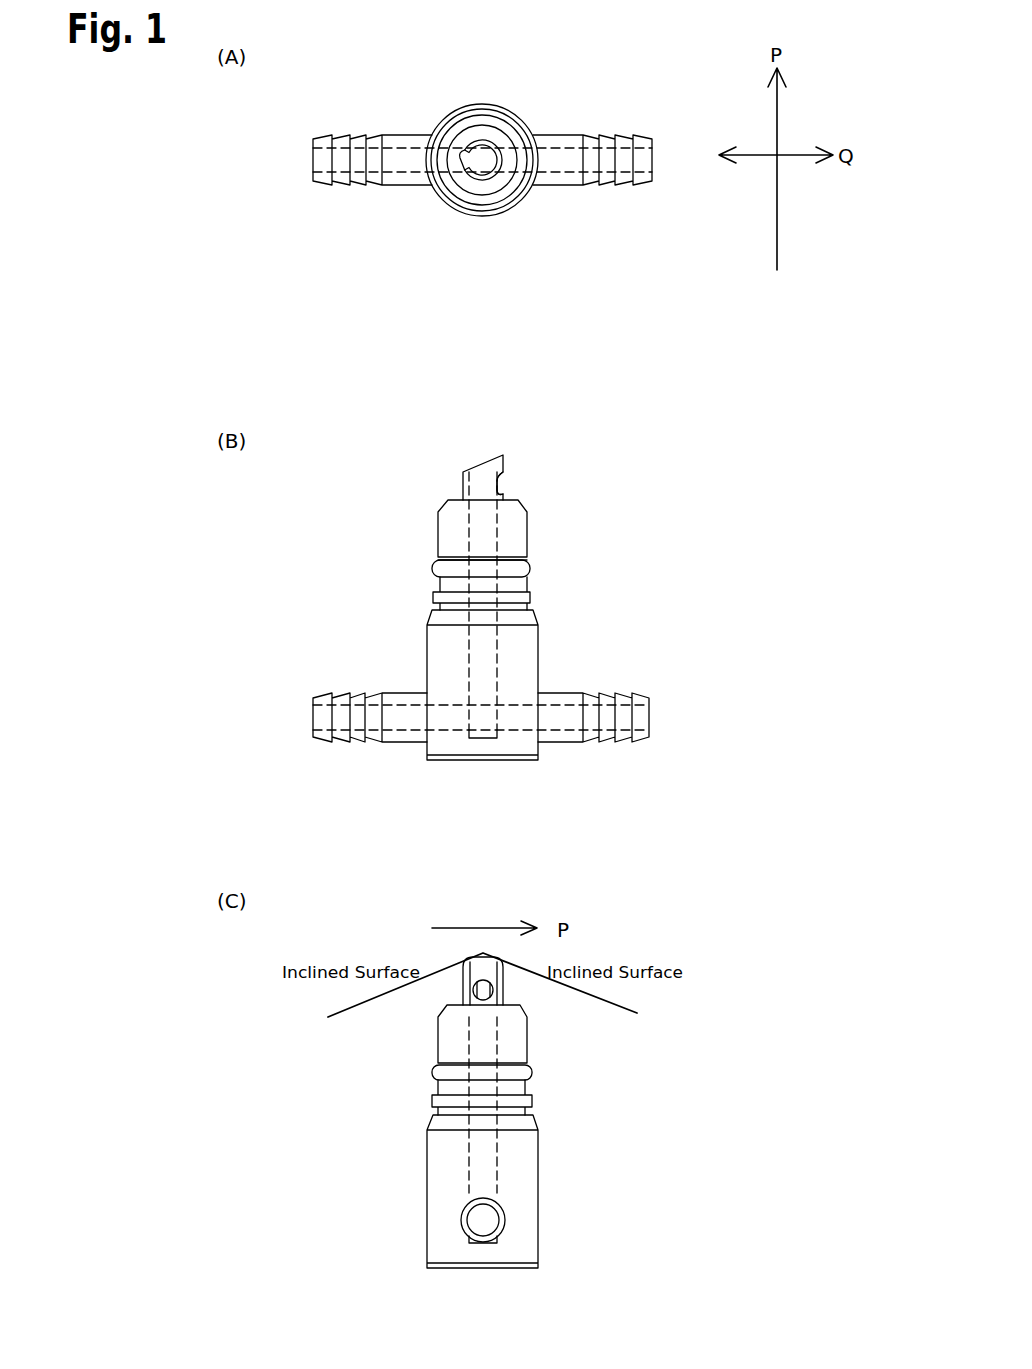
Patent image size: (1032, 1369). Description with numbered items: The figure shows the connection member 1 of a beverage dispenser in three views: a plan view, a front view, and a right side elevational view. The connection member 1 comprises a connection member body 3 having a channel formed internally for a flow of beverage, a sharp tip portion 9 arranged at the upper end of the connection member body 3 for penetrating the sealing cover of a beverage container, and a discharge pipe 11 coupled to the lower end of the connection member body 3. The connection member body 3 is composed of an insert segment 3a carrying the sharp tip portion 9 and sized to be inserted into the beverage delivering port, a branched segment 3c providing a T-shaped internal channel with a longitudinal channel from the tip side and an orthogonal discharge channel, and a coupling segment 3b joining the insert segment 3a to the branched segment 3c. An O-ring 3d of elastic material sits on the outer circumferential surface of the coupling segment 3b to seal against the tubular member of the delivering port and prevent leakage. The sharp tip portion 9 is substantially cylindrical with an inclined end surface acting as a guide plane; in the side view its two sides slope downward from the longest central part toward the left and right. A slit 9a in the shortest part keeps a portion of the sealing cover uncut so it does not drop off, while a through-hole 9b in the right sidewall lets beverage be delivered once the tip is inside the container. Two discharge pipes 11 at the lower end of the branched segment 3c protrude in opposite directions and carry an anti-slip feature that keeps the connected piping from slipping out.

The connection member 1 is at (588, 98).
The connection member body 3 is at (518, 203).
The insert segment 3a is at (527, 532).
The coupling segment 3b is at (528, 587).
The branched segment 3c is at (540, 643).
The O-ring 3d is at (437, 570).
The sharp tip portion 9 is at (482, 147).
The slit 9a is at (463, 157).
The through-hole 9b is at (497, 487).
The discharge pipe 11 is at (332, 140).